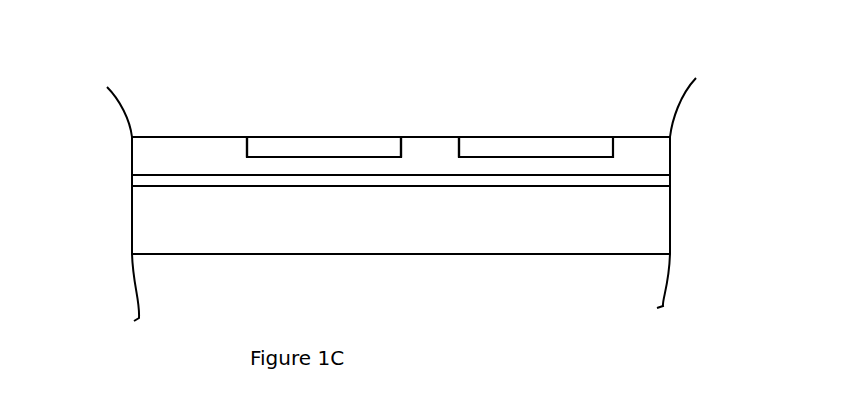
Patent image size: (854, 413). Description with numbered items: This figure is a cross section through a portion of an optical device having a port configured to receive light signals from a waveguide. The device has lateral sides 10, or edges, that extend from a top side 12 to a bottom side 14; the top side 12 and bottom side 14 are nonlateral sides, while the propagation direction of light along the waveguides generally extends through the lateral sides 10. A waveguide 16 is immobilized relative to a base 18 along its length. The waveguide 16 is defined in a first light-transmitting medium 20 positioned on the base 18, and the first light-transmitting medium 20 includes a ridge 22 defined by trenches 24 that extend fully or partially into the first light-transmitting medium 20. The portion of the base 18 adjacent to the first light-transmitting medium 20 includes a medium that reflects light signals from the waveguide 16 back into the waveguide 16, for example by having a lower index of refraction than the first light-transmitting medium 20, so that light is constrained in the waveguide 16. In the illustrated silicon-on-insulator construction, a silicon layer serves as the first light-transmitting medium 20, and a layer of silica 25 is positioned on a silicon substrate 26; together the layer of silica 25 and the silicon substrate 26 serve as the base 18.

The lateral sides 10 is at (708, 137).
The top side 12 is at (195, 137).
The bottom side 14 is at (178, 254).
The waveguide 16 is at (403, 95).
The base 18 is at (102, 175).
The first light-transmitting medium 20 is at (218, 157).
The ridge 22 is at (428, 137).
The trenches 24 is at (290, 157).
The layer of silica 25 is at (275, 186).
The silicon substrate 26 is at (353, 233).